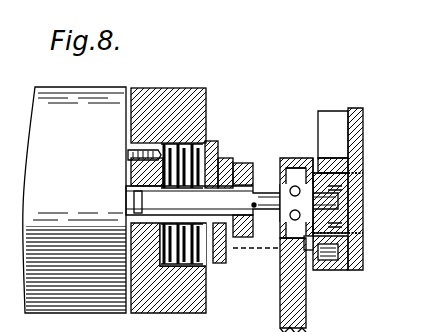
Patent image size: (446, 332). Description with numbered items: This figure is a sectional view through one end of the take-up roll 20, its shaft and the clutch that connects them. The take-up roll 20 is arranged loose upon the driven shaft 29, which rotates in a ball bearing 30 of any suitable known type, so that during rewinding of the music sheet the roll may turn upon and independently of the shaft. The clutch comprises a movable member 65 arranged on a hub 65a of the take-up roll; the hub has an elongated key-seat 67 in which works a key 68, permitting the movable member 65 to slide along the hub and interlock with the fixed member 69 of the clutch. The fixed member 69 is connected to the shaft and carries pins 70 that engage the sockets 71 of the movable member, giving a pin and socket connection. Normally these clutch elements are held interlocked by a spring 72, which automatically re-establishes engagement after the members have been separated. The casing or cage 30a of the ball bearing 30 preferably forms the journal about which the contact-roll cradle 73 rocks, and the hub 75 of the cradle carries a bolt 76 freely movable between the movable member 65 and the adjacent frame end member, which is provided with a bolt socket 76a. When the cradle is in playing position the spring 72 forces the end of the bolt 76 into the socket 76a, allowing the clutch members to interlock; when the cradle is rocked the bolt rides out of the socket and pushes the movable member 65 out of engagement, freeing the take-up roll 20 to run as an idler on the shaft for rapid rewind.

The take-up roll 20 is at (74, 200).
The sockets 71 is at (206, 258).
The spring 72 is at (183, 258).
The key 68 is at (208, 160).
The pins 70 is at (222, 170).
The movable member 65 is at (228, 158).
The hub 65a is at (150, 202).
The key-seat 67 is at (232, 200).
The driven shaft 29 is at (263, 205).
The fixed member 69 is at (250, 174).
The ball bearing 30 is at (273, 222).
The casing or cage 30a is at (306, 154).
The bolt socket 76a is at (330, 244).
The bolt 76 is at (300, 244).
The contact-roll cradle 73 is at (298, 298).
The hub 75 is at (270, 255).